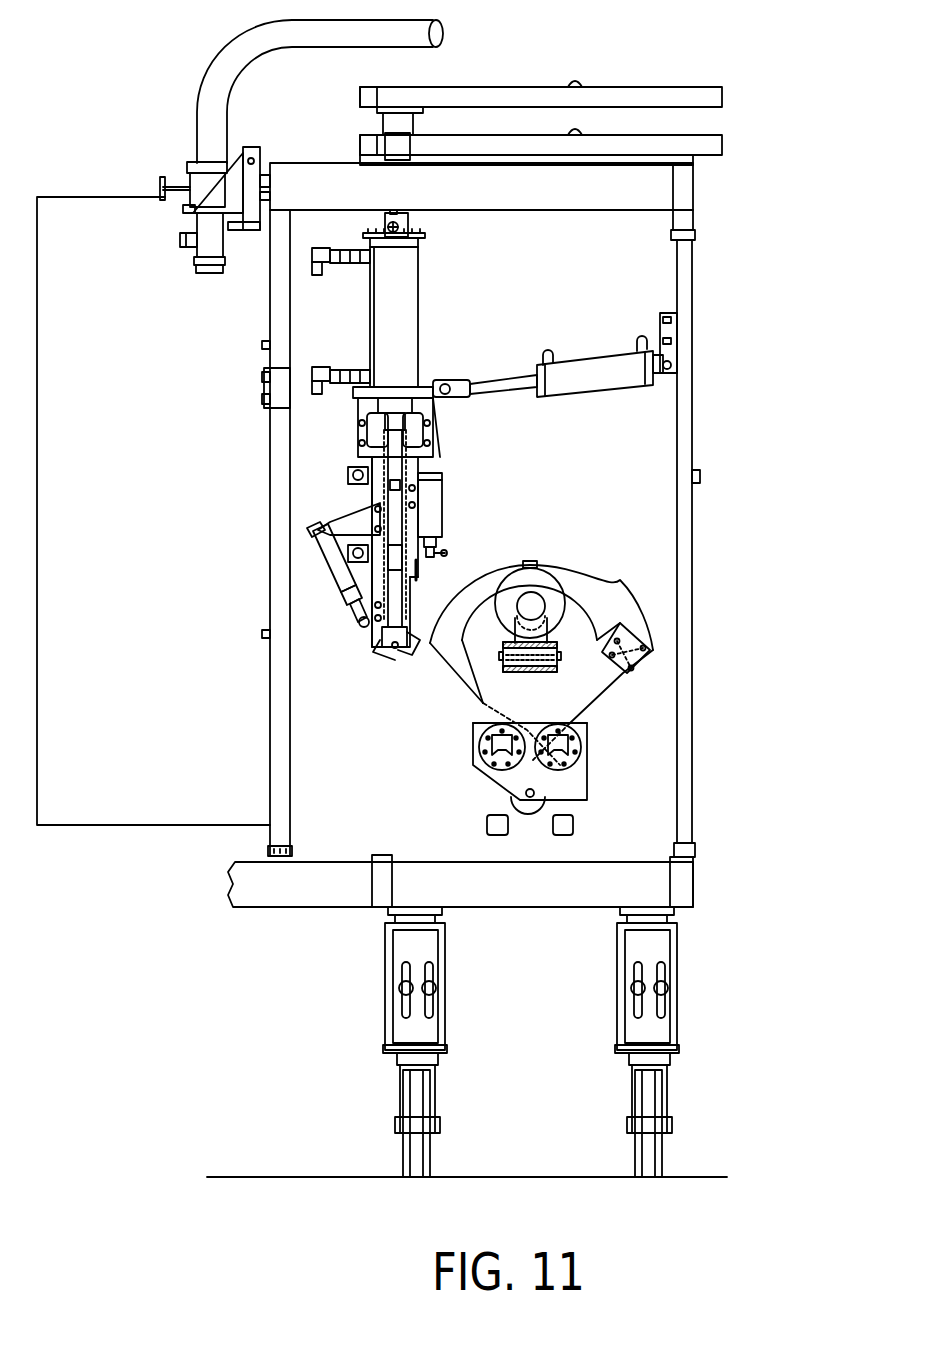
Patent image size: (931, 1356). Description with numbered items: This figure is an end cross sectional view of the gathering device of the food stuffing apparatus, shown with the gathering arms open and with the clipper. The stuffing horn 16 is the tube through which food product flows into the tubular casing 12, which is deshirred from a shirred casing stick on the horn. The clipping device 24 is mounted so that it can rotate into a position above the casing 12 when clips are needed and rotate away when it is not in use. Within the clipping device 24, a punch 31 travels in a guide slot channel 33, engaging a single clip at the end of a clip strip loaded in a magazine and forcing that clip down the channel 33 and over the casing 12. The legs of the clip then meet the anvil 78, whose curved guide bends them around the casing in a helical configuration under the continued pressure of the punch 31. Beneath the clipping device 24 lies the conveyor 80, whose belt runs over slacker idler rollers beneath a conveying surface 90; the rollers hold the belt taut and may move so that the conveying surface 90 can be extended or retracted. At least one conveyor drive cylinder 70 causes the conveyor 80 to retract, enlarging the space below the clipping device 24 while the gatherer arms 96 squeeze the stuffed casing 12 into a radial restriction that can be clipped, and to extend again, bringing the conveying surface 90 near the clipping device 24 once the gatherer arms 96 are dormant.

The tubular casing 12 is at (542, 638).
The stuffing horn 16 is at (532, 607).
The clipping device 24 is at (466, 483).
The punch 31 is at (395, 475).
The guide slot channel 33 is at (390, 496).
The conveyor drive cylinder 70 is at (560, 747).
The anvil 78 is at (383, 643).
The conveyor 80 is at (562, 658).
The conveying surface 90 is at (548, 643).
The gatherer arms 96 is at (627, 617).